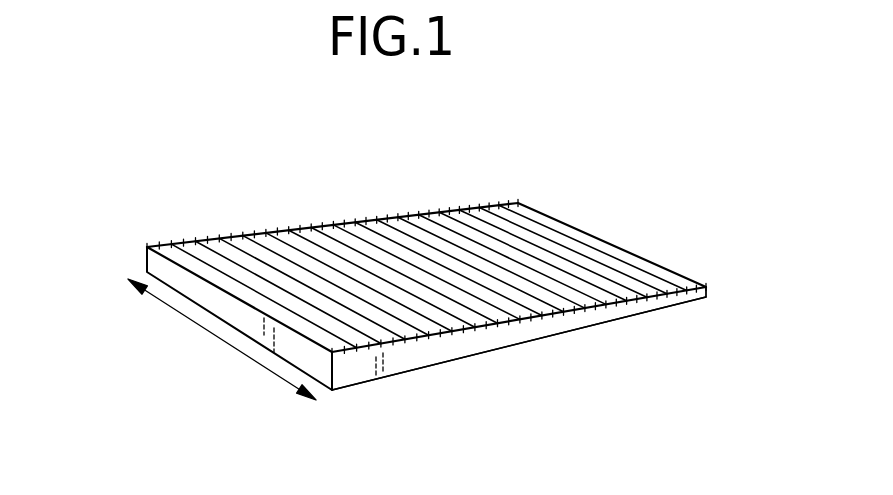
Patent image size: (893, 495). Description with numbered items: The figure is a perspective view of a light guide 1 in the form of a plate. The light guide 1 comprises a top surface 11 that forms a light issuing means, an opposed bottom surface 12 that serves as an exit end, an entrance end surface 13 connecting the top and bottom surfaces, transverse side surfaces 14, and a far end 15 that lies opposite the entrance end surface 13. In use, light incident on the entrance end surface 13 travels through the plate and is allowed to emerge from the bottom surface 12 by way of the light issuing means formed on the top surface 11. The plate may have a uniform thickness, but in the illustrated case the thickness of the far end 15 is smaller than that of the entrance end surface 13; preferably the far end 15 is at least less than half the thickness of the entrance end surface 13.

The light guide 1 is at (683, 237).
The top surface 11 is at (273, 268).
The bottom surface 12 is at (420, 371).
The entrance end surface 13 is at (145, 257).
The transverse side surfaces 14 is at (533, 333).
The far end 15 is at (706, 296).